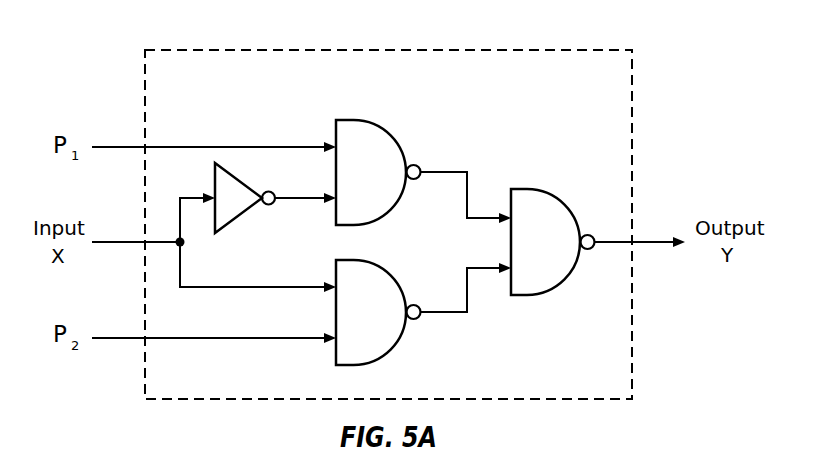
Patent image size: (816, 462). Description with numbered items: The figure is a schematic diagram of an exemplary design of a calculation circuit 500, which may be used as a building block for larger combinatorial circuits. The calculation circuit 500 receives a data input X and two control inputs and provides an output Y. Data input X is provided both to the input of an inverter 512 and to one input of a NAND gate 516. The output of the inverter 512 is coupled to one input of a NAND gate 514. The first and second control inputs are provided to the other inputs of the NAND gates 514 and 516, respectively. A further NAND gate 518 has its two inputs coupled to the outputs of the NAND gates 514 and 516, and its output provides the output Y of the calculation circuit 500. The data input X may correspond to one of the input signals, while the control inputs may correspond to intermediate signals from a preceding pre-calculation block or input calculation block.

The calculation circuit 500 is at (390, 49).
The inverter 512 is at (239, 181).
The NAND gate 514 is at (386, 133).
The NAND gate 516 is at (386, 273).
The NAND gate 518 is at (563, 202).